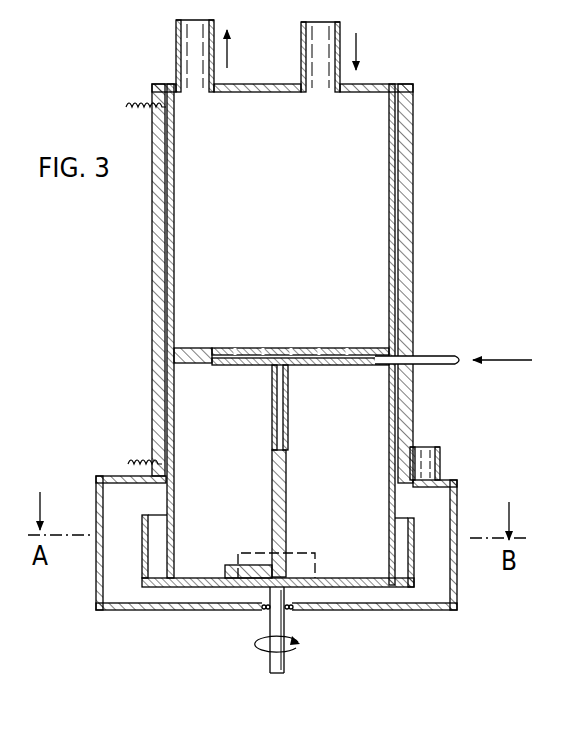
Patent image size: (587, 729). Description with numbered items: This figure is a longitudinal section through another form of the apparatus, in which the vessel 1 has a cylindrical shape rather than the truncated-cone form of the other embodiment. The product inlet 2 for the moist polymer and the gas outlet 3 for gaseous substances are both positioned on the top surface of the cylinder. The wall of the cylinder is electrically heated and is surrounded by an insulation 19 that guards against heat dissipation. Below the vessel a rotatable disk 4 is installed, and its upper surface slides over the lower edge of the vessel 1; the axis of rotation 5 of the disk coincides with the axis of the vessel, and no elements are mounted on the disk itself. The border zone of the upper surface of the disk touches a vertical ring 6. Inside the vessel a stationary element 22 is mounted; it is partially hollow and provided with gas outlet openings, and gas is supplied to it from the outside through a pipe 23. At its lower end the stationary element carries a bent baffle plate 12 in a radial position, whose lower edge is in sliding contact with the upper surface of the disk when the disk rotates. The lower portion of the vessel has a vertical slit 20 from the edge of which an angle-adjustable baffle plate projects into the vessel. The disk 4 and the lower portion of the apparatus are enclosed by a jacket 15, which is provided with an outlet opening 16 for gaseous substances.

The vessel 1 is at (370, 85).
The product inlet 2 is at (301, 46).
The gas outlet 3 is at (176, 45).
The rotatable disk 4 is at (395, 587).
The axis of rotation 5 is at (278, 645).
The vertical ring 6 is at (142, 558).
The bent baffle plate 12 is at (237, 578).
The jacket 15 is at (96, 500).
The outlet opening 16 is at (440, 456).
The insulation 19 is at (410, 134).
The vertical slit 20 is at (313, 566).
The stationary element 22 is at (355, 348).
The pipe 23 is at (418, 357).